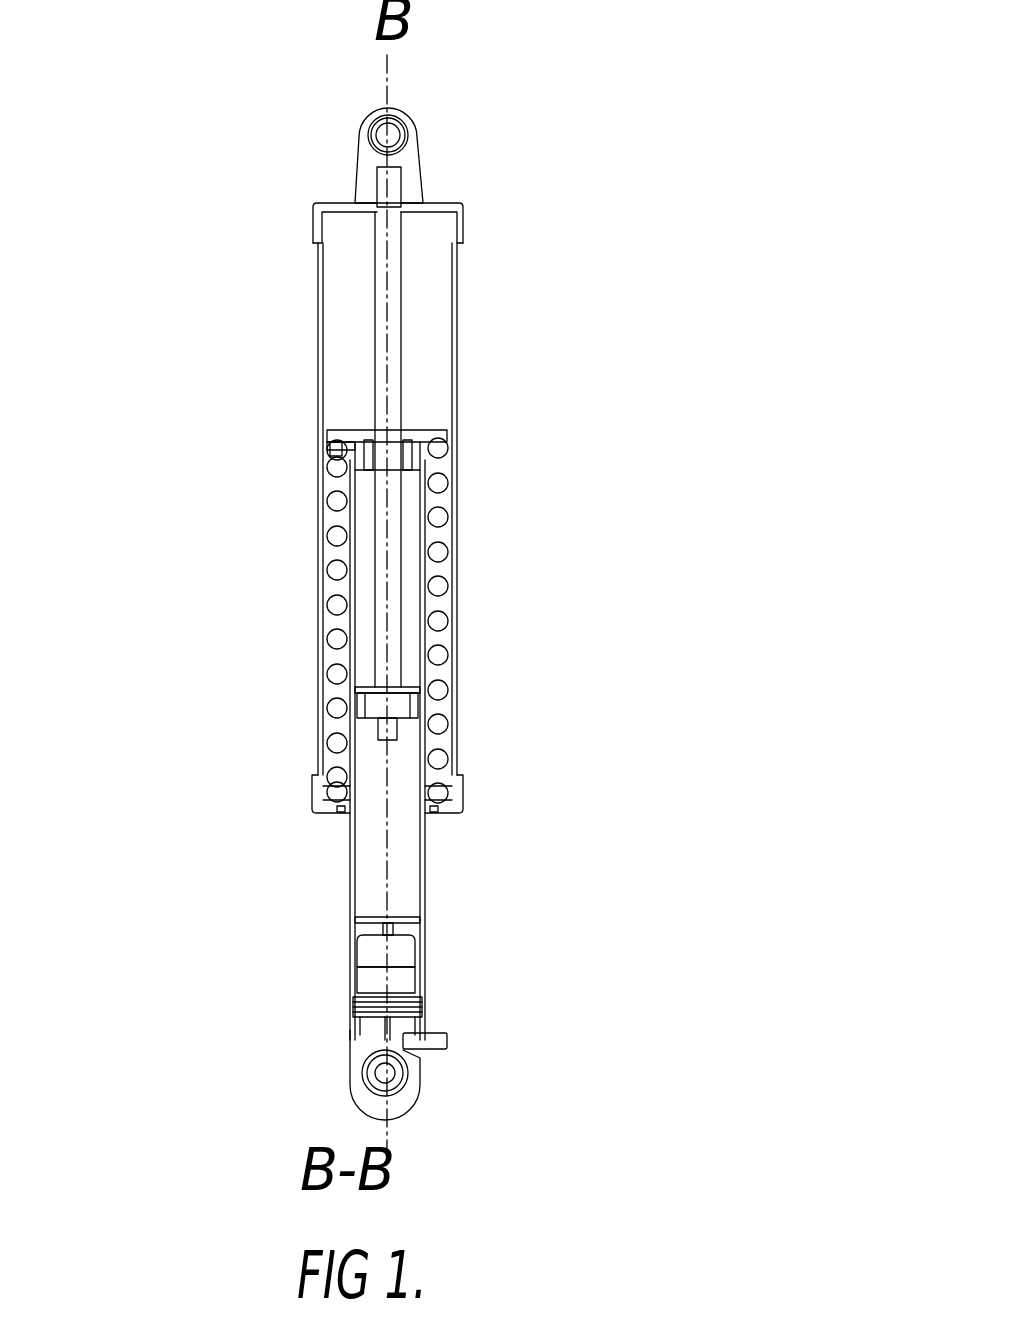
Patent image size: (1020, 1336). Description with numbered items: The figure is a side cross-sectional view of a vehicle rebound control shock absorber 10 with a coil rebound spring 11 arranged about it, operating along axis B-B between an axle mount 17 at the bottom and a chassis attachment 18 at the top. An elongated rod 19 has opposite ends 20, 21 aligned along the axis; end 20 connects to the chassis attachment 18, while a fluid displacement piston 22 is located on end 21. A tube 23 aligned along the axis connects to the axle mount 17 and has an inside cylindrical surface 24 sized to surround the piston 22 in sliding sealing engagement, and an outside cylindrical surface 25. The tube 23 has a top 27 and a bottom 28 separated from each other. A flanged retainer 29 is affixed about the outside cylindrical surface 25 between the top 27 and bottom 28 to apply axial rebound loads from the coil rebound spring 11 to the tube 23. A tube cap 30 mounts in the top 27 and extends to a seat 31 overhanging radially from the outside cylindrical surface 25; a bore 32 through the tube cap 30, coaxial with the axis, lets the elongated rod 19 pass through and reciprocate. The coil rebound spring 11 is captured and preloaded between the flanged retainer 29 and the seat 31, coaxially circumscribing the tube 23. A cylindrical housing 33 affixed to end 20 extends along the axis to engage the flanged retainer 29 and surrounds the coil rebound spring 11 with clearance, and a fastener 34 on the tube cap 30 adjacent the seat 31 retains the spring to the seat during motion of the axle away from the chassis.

The rebound control shock absorber 10 is at (660, 634).
The coil rebound spring 11 is at (336, 640).
The axle mount 17 is at (396, 1073).
The chassis attachment 18 is at (402, 136).
The elongated rod 19 is at (401, 360).
The end 20 is at (405, 182).
The end 21 is at (384, 738).
The fluid displacement piston 22 is at (408, 710).
The tube 23 is at (422, 980).
The inside cylindrical surface 24 is at (352, 892).
The outside cylindrical surface 25 is at (422, 907).
The top 27 is at (420, 528).
The bottom 28 is at (422, 1018).
The flanged retainer 29 is at (440, 812).
The tube cap 30 is at (325, 438).
The seat 31 is at (438, 437).
The bore 32 is at (368, 432).
The cylindrical housing 33 is at (320, 267).
The fastener 34 is at (338, 440).